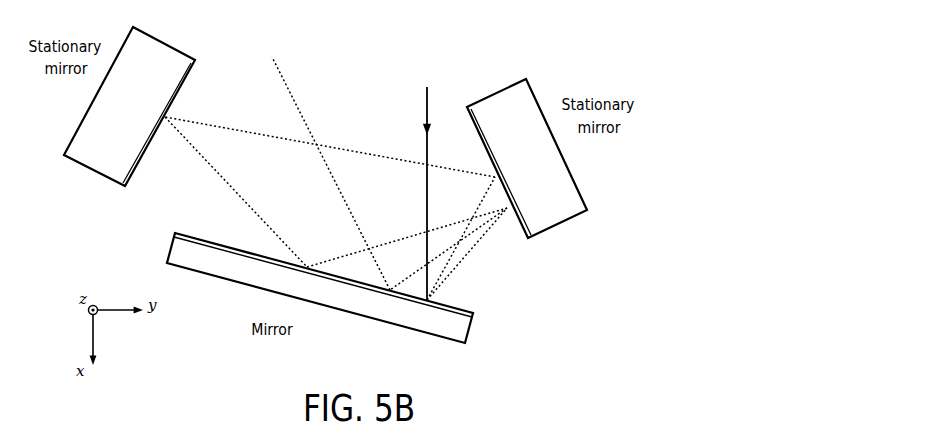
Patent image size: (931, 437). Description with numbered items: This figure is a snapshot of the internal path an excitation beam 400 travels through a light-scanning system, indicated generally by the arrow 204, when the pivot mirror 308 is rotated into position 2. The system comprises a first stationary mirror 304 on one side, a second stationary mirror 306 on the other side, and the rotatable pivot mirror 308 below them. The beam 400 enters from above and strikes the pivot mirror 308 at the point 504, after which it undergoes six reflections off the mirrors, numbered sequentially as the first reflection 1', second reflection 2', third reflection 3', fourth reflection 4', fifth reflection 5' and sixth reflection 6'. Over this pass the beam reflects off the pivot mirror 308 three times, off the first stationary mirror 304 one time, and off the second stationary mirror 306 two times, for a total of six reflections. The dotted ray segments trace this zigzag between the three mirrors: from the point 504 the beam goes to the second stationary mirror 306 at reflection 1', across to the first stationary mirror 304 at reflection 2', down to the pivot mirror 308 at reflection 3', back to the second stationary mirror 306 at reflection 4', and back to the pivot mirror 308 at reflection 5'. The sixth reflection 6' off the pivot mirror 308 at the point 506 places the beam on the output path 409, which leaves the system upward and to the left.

The optical system / mirror assembly 204 is at (550, 50).
The first stationary mirror 304 is at (98, 163).
The second stationary mirror 306 is at (553, 218).
The pivot mirror 308 is at (340, 297).
The position 2 is at (307, 267).
The beam 400 is at (424, 107).
The path 409 is at (389, 167).
The point 504 is at (468, 238).
The point 506 is at (336, 192).
The first reflection 1' is at (461, 238).
The second reflection 2' is at (330, 145).
The third reflection 3' is at (236, 192).
The fourth reflection 4' is at (407, 237).
The fifth reflection 5' is at (448, 249).
The sixth reflection 6' is at (331, 167).